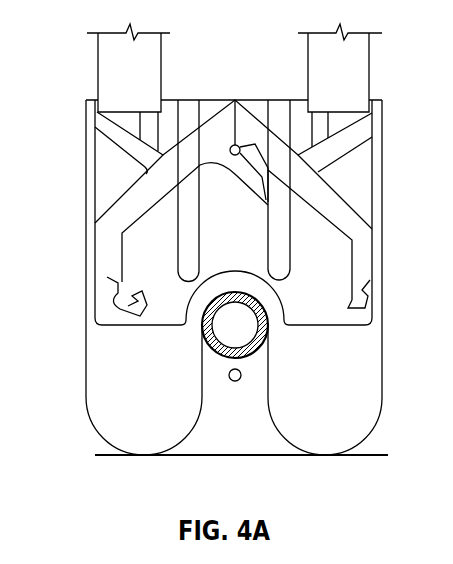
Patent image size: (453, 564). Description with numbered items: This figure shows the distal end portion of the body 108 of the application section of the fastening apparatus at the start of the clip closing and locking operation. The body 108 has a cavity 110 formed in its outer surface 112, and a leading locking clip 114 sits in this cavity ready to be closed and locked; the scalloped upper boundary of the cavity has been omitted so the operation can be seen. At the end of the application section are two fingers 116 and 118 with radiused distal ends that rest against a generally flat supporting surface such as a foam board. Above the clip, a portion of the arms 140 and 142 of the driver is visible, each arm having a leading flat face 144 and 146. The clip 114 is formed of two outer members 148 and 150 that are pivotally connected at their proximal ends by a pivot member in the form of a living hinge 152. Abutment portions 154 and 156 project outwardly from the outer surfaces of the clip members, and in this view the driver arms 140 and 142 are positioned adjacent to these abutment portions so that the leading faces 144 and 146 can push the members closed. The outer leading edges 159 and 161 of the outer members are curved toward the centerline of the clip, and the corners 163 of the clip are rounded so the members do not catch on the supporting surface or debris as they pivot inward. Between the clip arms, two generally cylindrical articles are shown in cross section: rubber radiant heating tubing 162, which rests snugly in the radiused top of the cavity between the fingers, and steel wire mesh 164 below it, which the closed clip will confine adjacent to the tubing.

The body 108 is at (82, 258).
The cavity 110 is at (383, 345).
The outer surface 112 is at (327, 245).
The leading locking clip 114 is at (253, 113).
The finger 116 is at (138, 446).
The finger 118 is at (323, 446).
The arm 140 is at (107, 73).
The arm 142 is at (362, 73).
The leading face 144 is at (123, 118).
The leading face 146 is at (376, 126).
The outer member 148 is at (117, 218).
The outer member 150 is at (355, 222).
The living hinge 152 is at (231, 146).
The abutment portion 154 is at (122, 142).
The abutment portion 156 is at (338, 148).
The outer leading edge 159 is at (100, 302).
The outer leading edge 161 is at (370, 302).
The radiant heating tubing 162 is at (227, 358).
The corner 163 is at (132, 327).
The steel wire mesh 164 is at (236, 382).